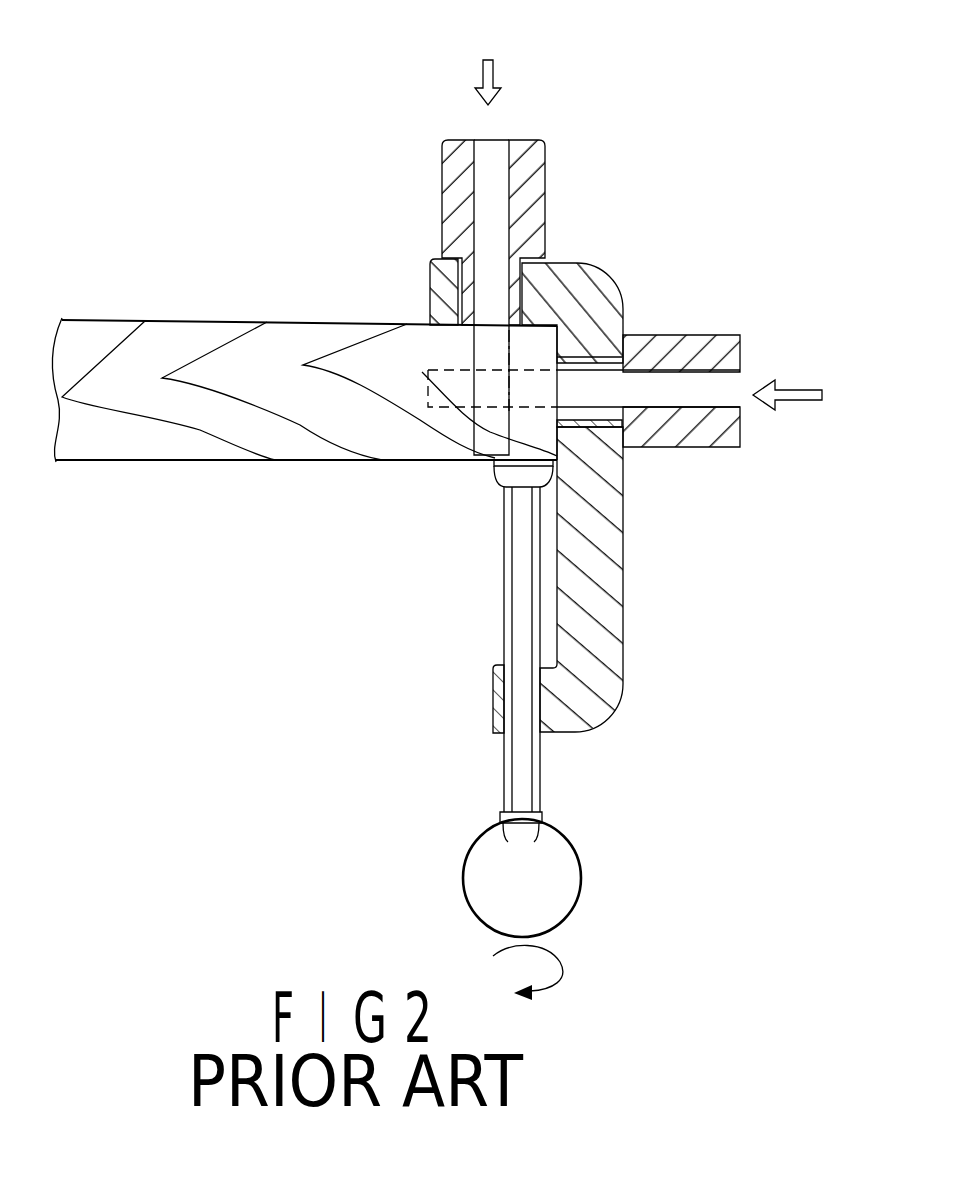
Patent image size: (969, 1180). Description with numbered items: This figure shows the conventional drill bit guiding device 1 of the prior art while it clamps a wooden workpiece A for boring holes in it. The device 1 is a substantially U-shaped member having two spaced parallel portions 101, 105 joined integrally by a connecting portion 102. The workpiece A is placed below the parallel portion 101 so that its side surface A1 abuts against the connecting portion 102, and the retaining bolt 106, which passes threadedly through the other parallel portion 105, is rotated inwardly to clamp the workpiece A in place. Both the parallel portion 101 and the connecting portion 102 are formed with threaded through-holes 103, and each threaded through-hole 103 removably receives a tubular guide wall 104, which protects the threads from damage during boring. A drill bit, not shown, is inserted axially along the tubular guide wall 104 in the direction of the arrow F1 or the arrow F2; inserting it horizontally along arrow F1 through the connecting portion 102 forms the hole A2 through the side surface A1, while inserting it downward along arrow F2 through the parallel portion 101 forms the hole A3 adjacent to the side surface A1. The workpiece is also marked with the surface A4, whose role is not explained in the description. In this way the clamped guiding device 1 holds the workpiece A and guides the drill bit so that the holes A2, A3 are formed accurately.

The drill bit guiding device 1 is at (558, 570).
The parallel portion 101 is at (435, 277).
The connecting portion 102 is at (618, 583).
The threaded through-hole 103 is at (530, 292).
The tubular guide wall 104 is at (538, 176).
The parallel portion 105 is at (493, 688).
The retaining bolt 106 is at (540, 782).
The wooden workpiece A is at (196, 335).
The side surface A1 is at (422, 372).
The hole A2 is at (425, 392).
The hole A3 is at (470, 424).
The board top surface A4 is at (286, 323).
The arrow F1 is at (810, 393).
The arrow F2 is at (483, 57).